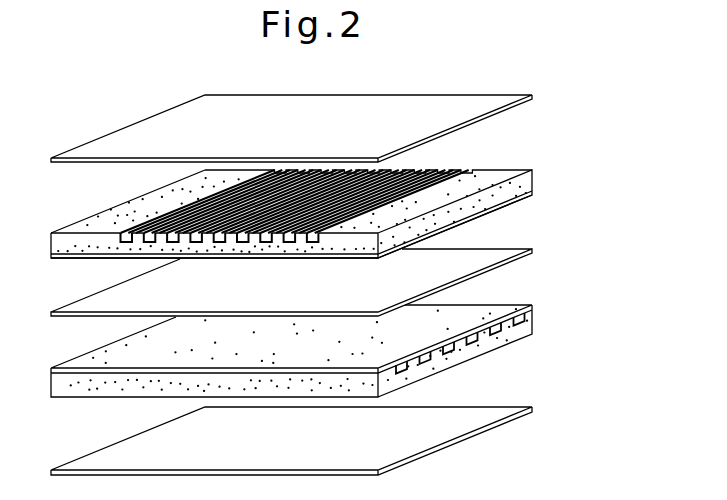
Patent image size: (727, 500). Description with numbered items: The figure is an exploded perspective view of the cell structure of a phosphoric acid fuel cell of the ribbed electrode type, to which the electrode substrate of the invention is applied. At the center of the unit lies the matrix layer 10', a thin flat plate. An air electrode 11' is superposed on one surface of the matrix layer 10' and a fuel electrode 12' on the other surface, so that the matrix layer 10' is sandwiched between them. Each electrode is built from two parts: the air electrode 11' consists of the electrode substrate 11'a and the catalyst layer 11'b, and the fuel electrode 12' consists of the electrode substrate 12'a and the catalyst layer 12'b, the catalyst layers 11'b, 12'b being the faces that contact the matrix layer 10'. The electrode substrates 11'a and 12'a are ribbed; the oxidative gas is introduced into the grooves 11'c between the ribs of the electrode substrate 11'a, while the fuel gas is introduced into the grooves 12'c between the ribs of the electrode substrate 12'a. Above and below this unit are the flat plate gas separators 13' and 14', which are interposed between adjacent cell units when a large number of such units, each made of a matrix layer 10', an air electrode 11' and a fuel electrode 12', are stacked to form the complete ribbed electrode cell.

The gas separator 13' is at (325, 112).
The air electrode 11' is at (352, 191).
The electrode substrate 11'a is at (337, 211).
The catalyst layer 11'b is at (338, 224).
The grooves 11'c is at (351, 183).
The matrix layer 10' is at (326, 272).
The fuel electrode 12' is at (346, 339).
The catalyst layer 12'b is at (325, 328).
The electrode substrate 12'a is at (325, 353).
The grooves 12'c is at (480, 351).
The gas separator 14' is at (308, 441).